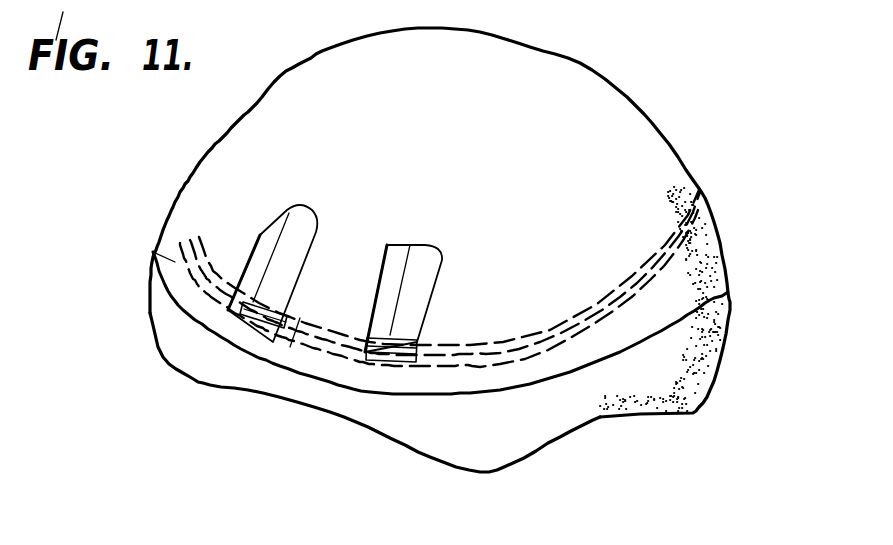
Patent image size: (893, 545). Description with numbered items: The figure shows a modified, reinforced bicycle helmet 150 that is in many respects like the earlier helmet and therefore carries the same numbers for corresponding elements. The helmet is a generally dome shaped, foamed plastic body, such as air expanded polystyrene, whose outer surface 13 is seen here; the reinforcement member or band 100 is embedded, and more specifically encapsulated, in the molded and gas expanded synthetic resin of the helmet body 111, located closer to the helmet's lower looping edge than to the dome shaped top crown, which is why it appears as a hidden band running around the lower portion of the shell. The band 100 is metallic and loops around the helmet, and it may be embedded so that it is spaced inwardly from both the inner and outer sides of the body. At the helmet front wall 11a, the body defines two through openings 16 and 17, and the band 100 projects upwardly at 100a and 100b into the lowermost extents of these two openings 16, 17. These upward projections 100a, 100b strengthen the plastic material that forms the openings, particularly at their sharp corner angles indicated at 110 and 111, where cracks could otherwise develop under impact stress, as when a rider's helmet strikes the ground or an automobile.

The helmet 150 is at (640, 98).
The through opening 16 is at (263, 233).
The through opening 17 is at (422, 268).
The upward projection of band 100a is at (265, 300).
The upward projection of band 100b is at (400, 336).
The outer surface 13 is at (198, 272).
The sharp corner angle 110 is at (210, 385).
The helmet front wall 11a is at (300, 305).
The reinforcement band 100 is at (325, 356).
The helmet body 111 is at (373, 360).